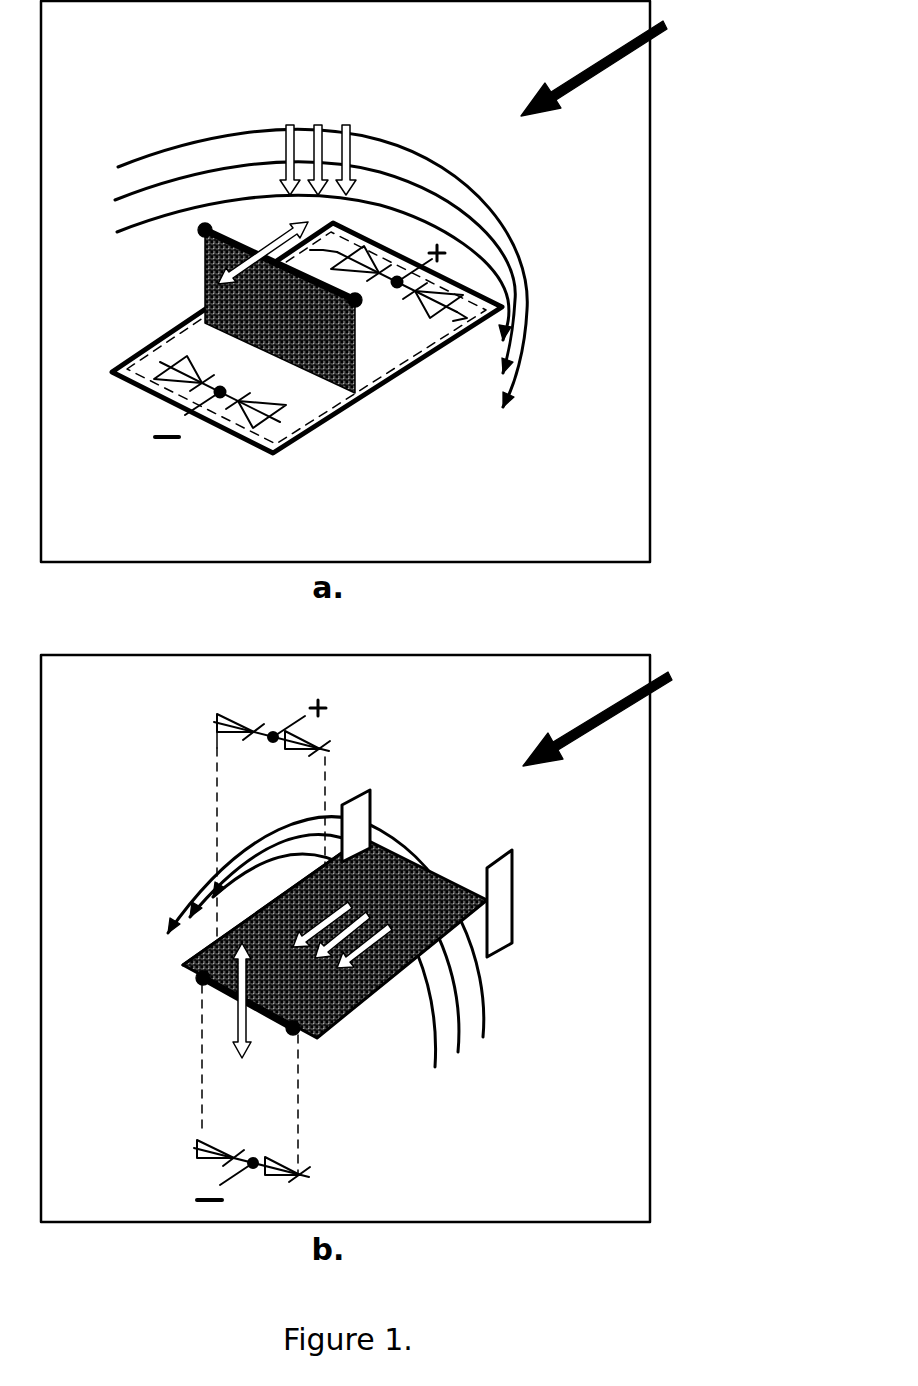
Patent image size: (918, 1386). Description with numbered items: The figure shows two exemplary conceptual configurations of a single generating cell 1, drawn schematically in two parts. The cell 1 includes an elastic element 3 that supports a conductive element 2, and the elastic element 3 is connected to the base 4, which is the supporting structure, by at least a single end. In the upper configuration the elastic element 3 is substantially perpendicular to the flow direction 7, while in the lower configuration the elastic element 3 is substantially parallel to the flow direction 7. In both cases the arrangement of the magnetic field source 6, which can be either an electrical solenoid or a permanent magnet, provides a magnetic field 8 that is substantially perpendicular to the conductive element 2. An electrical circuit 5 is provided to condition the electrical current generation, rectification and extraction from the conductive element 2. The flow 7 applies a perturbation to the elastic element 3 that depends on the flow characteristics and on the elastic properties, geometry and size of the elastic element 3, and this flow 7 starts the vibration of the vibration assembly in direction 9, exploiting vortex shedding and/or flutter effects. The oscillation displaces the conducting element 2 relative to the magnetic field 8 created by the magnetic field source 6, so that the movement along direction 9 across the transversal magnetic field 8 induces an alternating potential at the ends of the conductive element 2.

The cell 1 is at (652, 196).
The conductive element 2 is at (357, 340).
The elastic element 3 is at (353, 393).
The base 4 is at (268, 450).
The electrical circuit 5 is at (300, 428).
The magnetic field source 6 is at (525, 338).
The flow direction 7 is at (668, 30).
The magnetic field 8 is at (285, 138).
The direction of vibration 9 is at (210, 275).